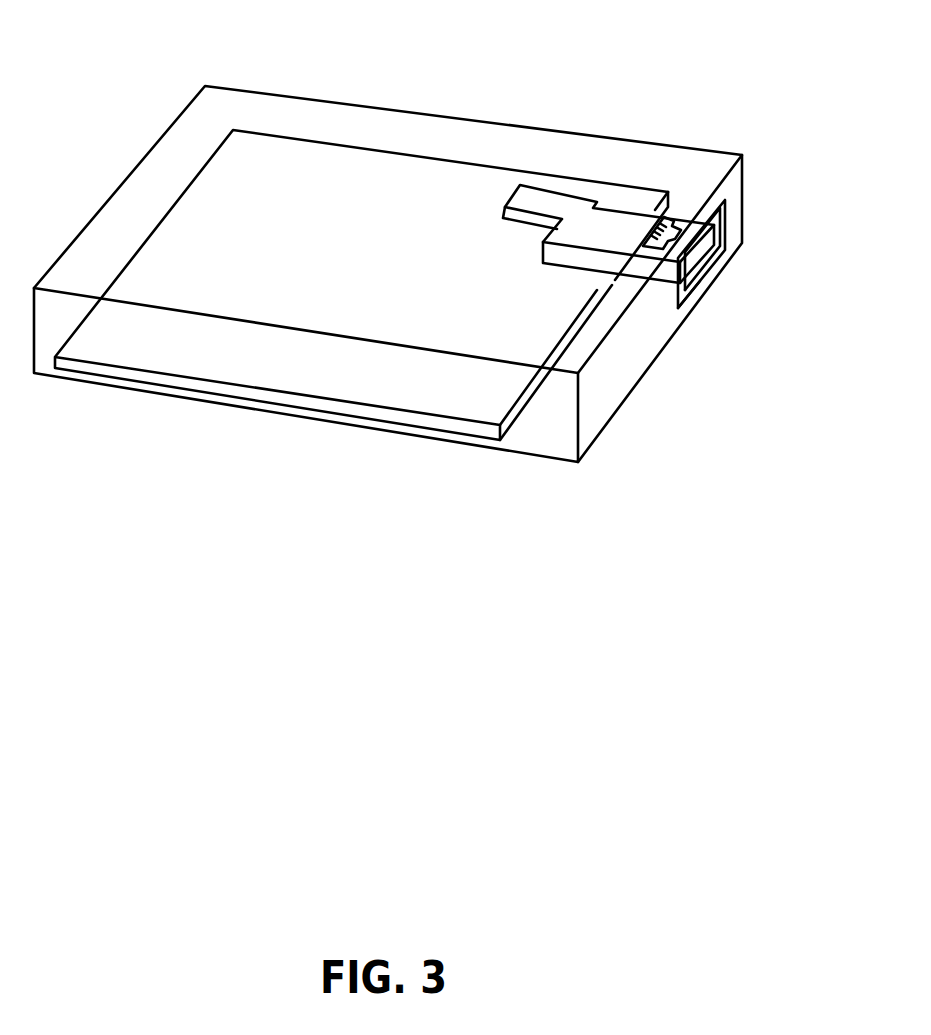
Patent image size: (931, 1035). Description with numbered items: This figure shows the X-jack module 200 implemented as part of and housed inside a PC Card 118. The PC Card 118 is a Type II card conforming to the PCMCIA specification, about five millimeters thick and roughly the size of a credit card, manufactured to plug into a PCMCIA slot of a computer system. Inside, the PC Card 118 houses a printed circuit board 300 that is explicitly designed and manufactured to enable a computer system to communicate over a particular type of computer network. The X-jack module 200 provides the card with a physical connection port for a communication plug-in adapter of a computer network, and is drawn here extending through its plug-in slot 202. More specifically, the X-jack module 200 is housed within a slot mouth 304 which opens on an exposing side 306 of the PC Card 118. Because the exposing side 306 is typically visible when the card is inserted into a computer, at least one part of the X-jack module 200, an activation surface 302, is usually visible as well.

The PC Card 118 is at (255, 91).
The X-jack module 200 is at (535, 203).
The plug-in slot 202 is at (712, 170).
The printed circuit board 300 is at (248, 357).
The activation surface 302 is at (727, 266).
The slot mouth 304 is at (695, 311).
The exposing side 306 is at (627, 358).